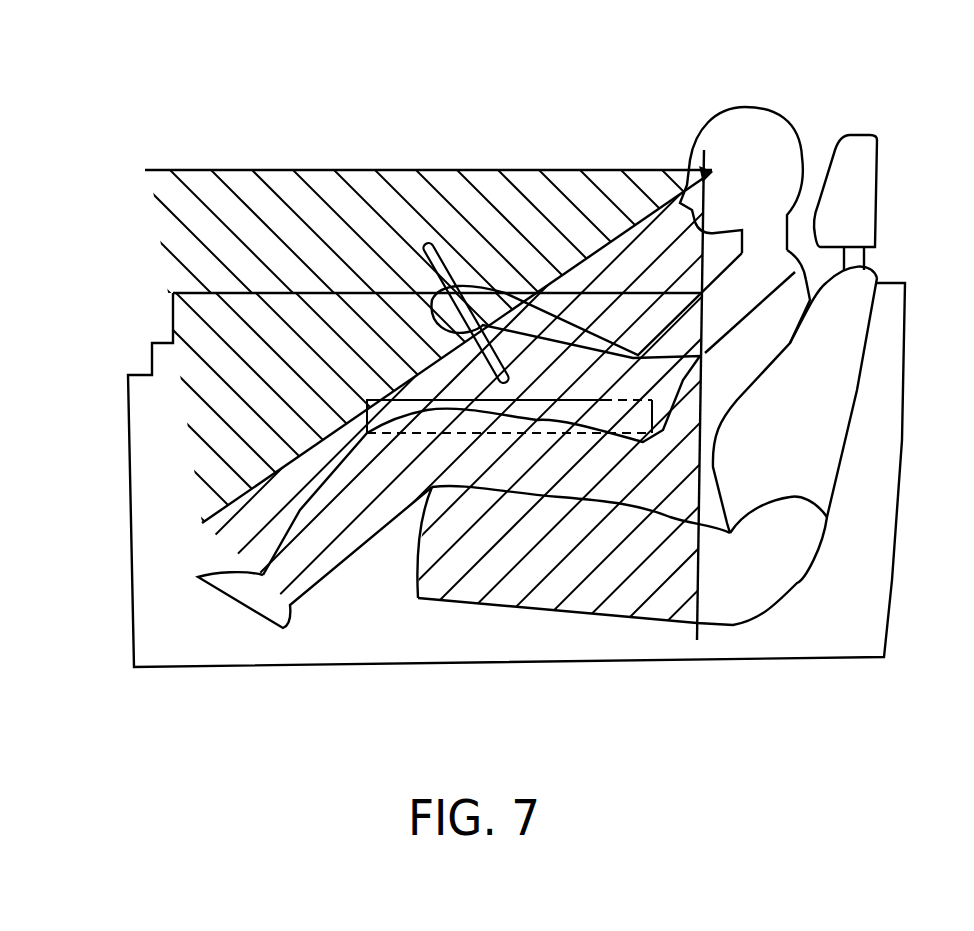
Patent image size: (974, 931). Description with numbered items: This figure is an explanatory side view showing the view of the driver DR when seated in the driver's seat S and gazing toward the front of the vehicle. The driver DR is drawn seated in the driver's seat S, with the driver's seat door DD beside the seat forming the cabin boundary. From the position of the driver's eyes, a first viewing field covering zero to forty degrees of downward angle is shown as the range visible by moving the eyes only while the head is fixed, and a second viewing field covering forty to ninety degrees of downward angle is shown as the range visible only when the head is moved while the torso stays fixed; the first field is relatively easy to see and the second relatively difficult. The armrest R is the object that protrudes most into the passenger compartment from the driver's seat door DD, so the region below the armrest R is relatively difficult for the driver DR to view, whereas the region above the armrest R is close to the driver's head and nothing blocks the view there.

The driver's seat door DD is at (153, 437).
The armrest R is at (603, 413).
The driver DR is at (798, 133).
The driver's seat S is at (822, 417).